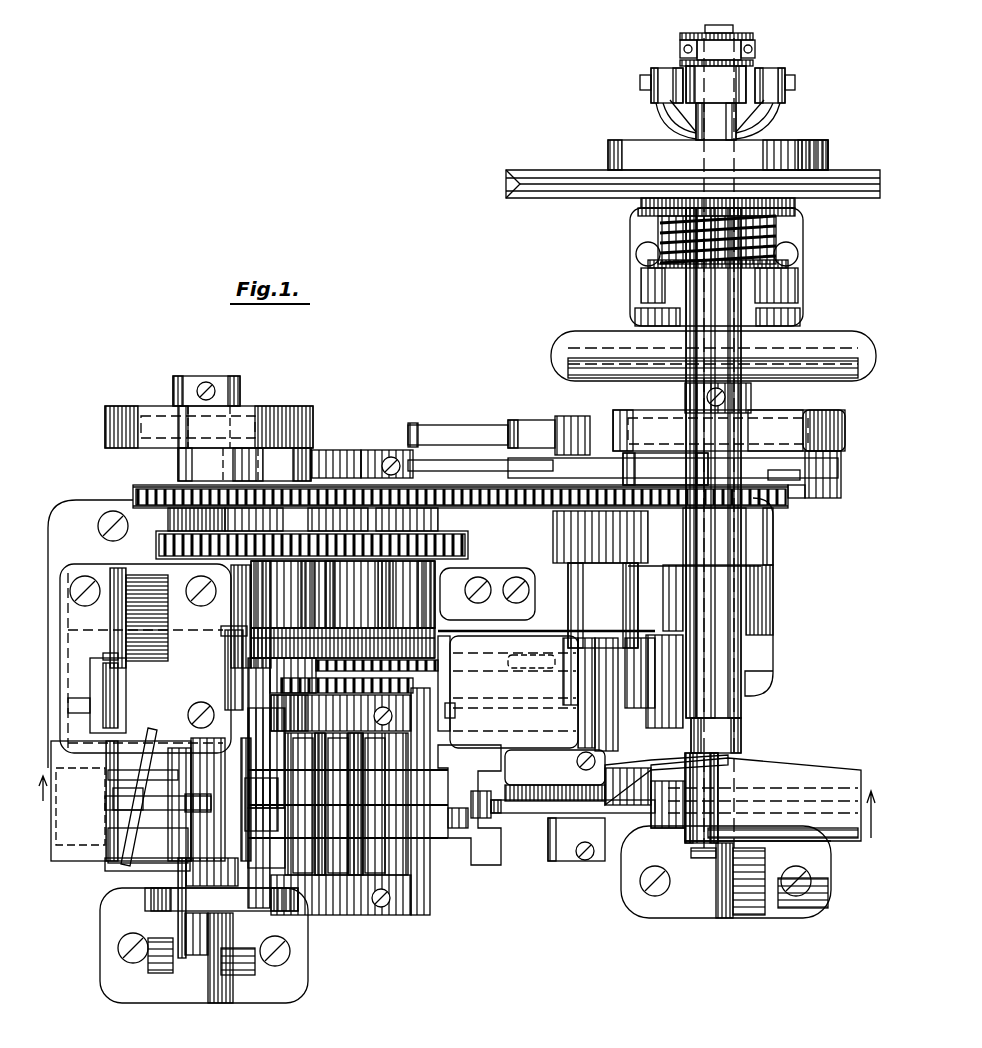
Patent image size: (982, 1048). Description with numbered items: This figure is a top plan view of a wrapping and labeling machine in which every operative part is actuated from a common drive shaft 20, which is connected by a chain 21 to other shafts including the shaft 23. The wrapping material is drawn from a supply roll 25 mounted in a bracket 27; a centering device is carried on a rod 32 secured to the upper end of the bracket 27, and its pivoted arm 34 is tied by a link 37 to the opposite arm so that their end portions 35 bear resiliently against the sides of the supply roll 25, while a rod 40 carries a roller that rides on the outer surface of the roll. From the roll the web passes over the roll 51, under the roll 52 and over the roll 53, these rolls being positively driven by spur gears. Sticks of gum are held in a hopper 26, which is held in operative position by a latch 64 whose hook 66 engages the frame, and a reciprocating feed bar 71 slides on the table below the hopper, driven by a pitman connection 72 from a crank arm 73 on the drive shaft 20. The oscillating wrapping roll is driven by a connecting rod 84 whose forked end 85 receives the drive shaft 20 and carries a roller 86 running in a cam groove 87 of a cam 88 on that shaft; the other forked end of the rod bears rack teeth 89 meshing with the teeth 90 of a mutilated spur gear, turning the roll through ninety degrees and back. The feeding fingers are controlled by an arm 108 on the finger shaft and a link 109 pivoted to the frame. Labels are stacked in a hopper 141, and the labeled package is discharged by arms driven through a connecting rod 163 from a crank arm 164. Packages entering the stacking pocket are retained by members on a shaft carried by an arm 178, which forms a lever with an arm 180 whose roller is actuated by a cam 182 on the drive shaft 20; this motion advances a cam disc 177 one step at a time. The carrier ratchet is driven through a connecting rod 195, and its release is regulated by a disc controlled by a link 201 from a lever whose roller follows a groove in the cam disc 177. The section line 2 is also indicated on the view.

The drive shaft 20 is at (697, 20).
The shaft 23 is at (213, 352).
The rack teeth 89 is at (318, 440).
The teeth of mutilated spur gear 90 is at (343, 442).
The connecting rod 163 is at (432, 418).
The connecting rod 84 is at (445, 452).
The crank arm 164 is at (590, 447).
The cam groove 87 is at (607, 420).
The roller 86 is at (647, 428).
The cam 88 is at (775, 408).
The cam 182 is at (825, 408).
The arm 180 is at (826, 488).
The forked end 85 is at (770, 470).
The chain 21 is at (140, 481).
The link 109 is at (225, 630).
The arm 108 is at (217, 675).
The link 37 is at (148, 722).
The arm 34 is at (193, 696).
The bracket 27 is at (88, 673).
The cam disc 177 is at (585, 640).
The link 201 is at (765, 668).
The arm 178 is at (667, 723).
The connecting rod 195 is at (790, 758).
The hopper 141 is at (139, 823).
The section line 2 is at (456, 799).
The supply roll 25 is at (100, 770).
The rod 40 is at (105, 795).
The rod 32 is at (115, 835).
The end portions 35 is at (140, 862).
The hook 66 is at (399, 908).
The roll 51 is at (297, 870).
The roll 52 is at (335, 870).
The roll 53 is at (370, 870).
The latch 64 is at (475, 858).
The hopper 26 is at (480, 810).
The feed bar 71 is at (512, 810).
The pitman connection 72 is at (540, 810).
The crank arm 73 is at (647, 823).